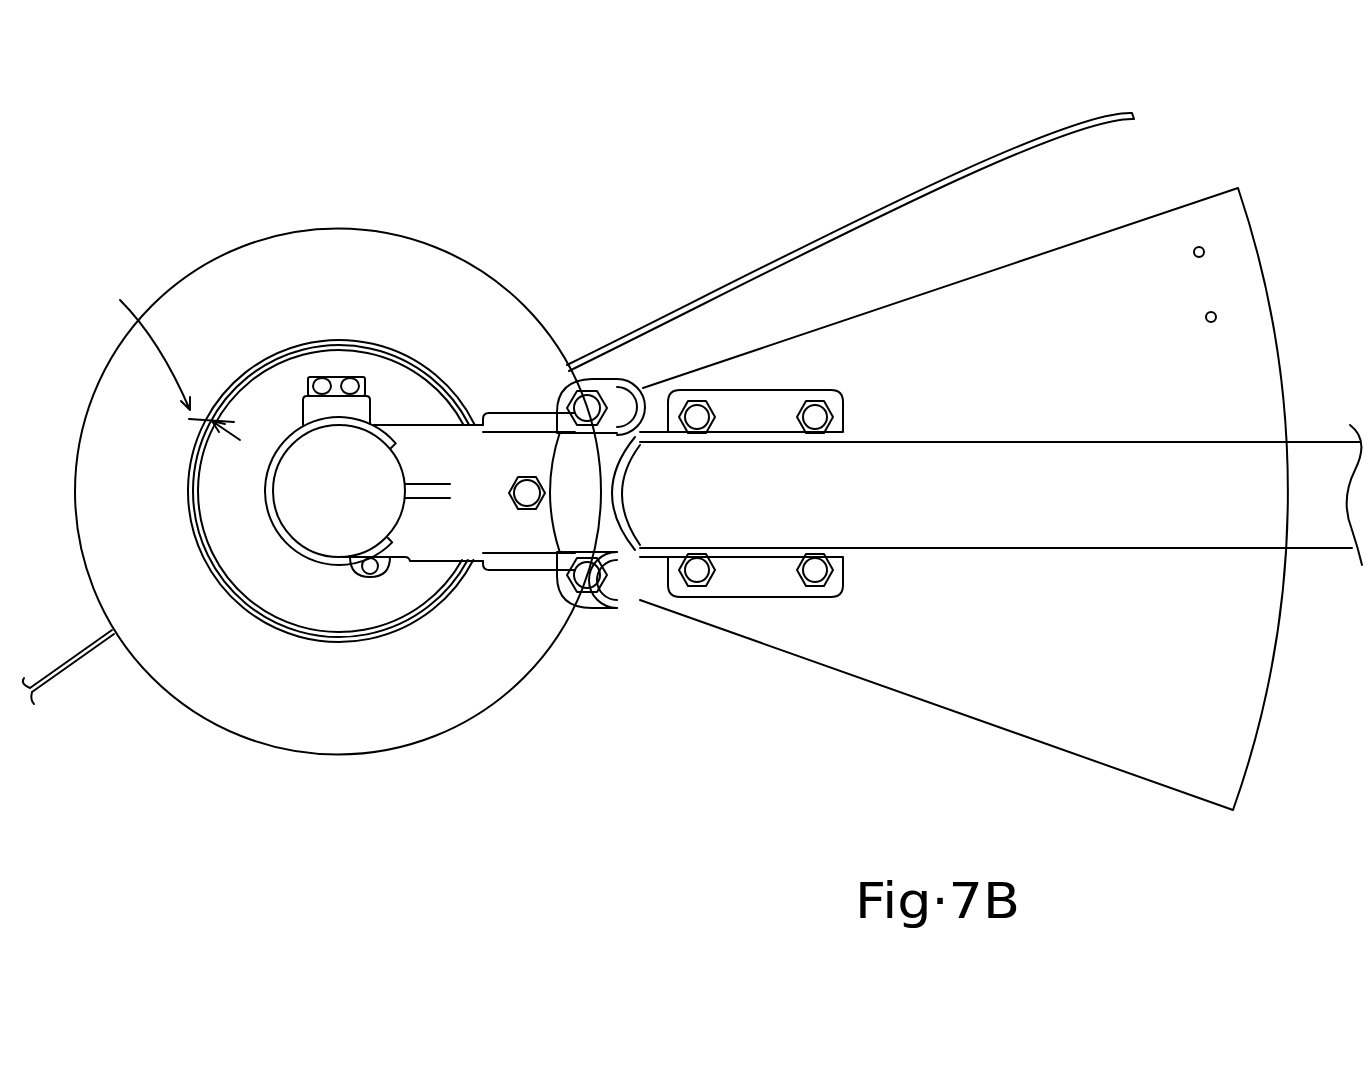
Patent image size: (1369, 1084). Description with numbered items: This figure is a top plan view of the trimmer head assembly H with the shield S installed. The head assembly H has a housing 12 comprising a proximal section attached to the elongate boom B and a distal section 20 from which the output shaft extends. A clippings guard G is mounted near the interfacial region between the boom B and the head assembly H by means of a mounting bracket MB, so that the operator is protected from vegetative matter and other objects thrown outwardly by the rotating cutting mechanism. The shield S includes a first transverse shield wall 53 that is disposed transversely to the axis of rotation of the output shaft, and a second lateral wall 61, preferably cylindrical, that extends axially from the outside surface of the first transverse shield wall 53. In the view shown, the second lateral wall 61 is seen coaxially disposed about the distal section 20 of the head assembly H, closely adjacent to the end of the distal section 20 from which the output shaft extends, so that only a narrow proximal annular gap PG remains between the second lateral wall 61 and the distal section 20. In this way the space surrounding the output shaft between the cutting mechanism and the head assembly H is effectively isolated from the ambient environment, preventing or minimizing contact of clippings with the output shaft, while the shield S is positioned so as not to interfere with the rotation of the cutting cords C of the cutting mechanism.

The shield S is at (338, 556).
The first transverse shield wall 53 is at (240, 683).
The second lateral wall 61 is at (242, 375).
The proximal annular gap PG is at (168, 352).
The distal section 20 is at (270, 393).
The housing 12 is at (402, 425).
The mounting bracket MB is at (758, 600).
The trimmer head assembly H is at (627, 743).
The boom B is at (1295, 443).
The clippings guard G is at (1090, 235).
The cords C is at (877, 210).